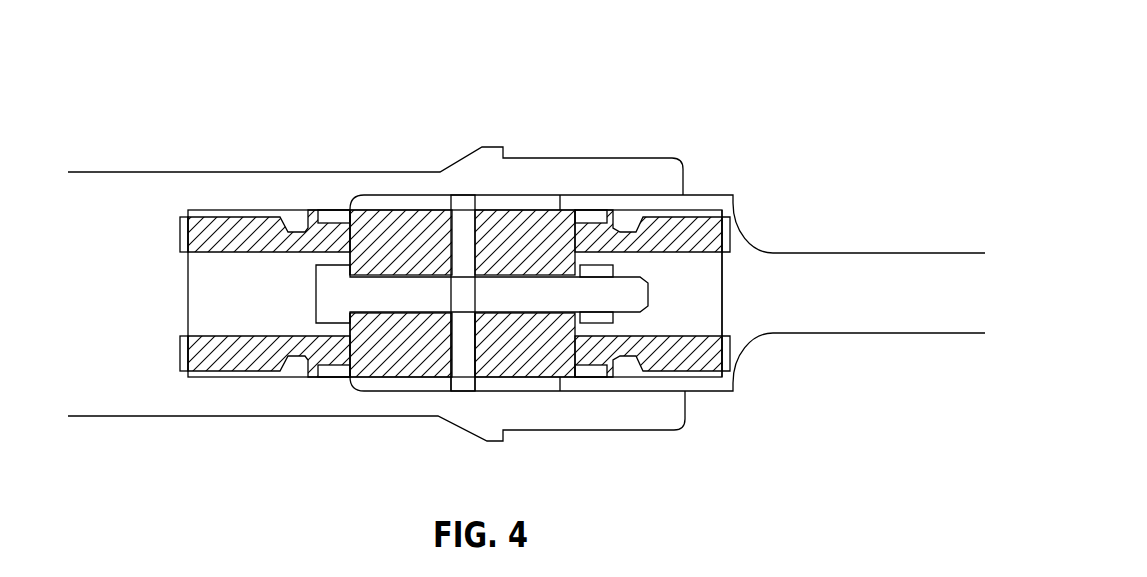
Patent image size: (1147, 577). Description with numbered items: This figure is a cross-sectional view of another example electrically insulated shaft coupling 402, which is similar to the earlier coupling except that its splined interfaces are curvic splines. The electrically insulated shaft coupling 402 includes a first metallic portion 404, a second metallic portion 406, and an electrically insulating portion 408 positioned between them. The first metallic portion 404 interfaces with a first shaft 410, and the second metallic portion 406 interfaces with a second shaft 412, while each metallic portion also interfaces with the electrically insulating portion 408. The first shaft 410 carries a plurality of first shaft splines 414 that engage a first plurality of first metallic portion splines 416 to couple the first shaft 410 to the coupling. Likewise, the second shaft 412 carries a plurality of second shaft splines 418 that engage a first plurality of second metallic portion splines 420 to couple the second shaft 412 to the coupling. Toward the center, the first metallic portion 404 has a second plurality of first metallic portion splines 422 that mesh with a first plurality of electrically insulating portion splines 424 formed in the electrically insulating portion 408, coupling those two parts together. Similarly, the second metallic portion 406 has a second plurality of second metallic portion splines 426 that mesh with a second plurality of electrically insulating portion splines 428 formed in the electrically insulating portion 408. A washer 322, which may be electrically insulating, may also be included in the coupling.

The electrically insulated shaft coupling 402 is at (446, 135).
The first metallic portion 404 is at (543, 223).
The second metallic portion 406 is at (387, 225).
The electrically insulating portion 408 is at (467, 207).
The first shaft 410 is at (843, 318).
The second shaft 412 is at (118, 408).
The first shaft splines 414 is at (722, 208).
The first plurality of first metallic portion splines 416 is at (722, 233).
The second shaft splines 418 is at (185, 208).
The first plurality of second metallic portion splines 420 is at (187, 233).
The second plurality of first metallic portion splines 422 is at (475, 385).
The first plurality of electrically insulating portion splines 424 is at (484, 353).
The second plurality of second metallic portion splines 426 is at (451, 385).
The second plurality of electrically insulating portion splines 428 is at (447, 353).
The washer 322 is at (708, 282).